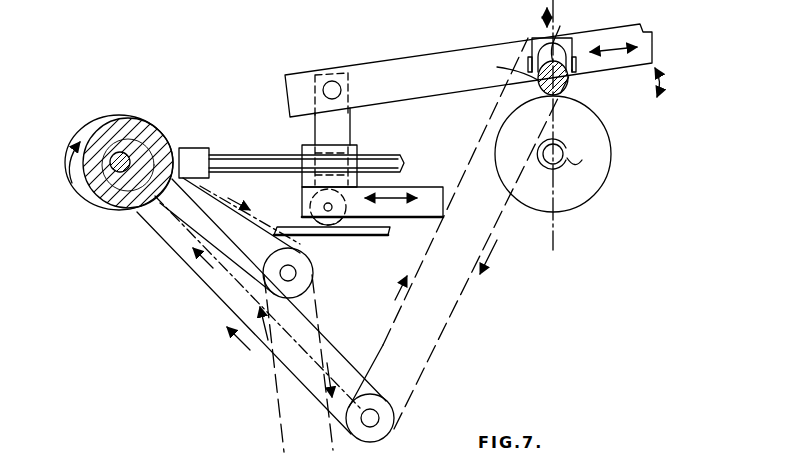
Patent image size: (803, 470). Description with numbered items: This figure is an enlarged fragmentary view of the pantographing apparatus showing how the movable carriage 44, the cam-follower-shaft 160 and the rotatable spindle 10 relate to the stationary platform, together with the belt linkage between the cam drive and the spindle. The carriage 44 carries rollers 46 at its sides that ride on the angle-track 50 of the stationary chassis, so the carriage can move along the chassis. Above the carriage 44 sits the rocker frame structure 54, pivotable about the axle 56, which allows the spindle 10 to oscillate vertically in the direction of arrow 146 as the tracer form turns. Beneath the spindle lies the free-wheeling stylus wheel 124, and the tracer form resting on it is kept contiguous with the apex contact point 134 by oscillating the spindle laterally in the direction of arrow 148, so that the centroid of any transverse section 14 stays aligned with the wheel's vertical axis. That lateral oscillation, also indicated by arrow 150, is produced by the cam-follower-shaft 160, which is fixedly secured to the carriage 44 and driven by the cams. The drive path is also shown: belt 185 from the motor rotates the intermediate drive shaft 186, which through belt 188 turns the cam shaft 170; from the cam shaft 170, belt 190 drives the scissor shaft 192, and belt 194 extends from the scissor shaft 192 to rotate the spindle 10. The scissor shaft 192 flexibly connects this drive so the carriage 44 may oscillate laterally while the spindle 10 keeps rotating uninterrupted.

The rotatable spindle 10 is at (532, 37).
The transverse section 14 is at (575, 50).
The carriage 44 is at (416, 210).
The rollers 46 is at (336, 216).
The angle-track 50 is at (380, 237).
The rocker frame structure 54 is at (440, 40).
The axle 56 is at (340, 82).
The rotatable stylus wheel 124 is at (583, 193).
The apex contact point 134 is at (567, 89).
The arrow 146 is at (543, 33).
The arrow 148 is at (652, 34).
The arrow 150 is at (390, 197).
The cam-follower-shaft 160 is at (258, 156).
The cam shaft 170 is at (115, 170).
The belt 185 is at (277, 395).
The intermediate drive shaft 186 is at (293, 277).
The belt 188 is at (169, 233).
The belt 190 is at (187, 267).
The scissor shaft 192 is at (378, 421).
The belt 194 is at (456, 333).